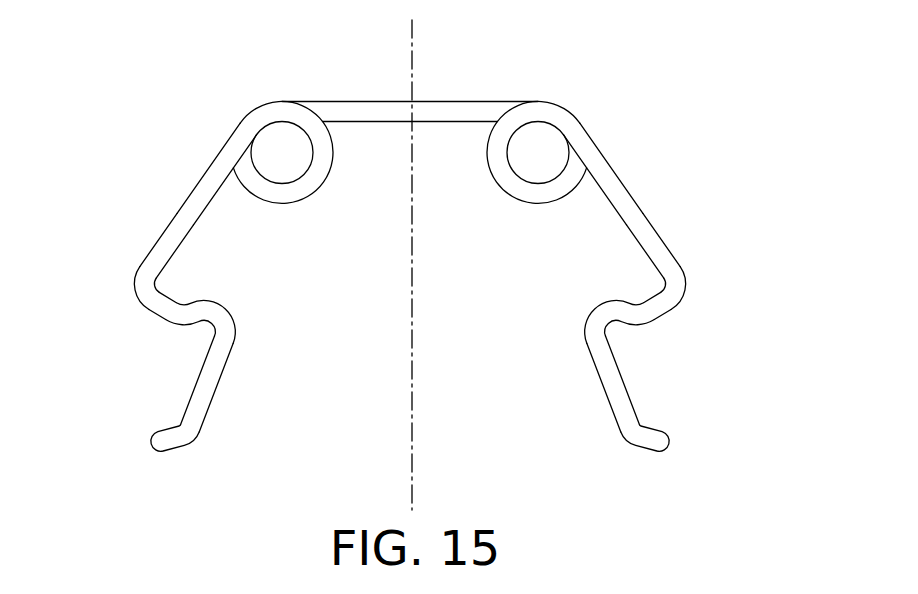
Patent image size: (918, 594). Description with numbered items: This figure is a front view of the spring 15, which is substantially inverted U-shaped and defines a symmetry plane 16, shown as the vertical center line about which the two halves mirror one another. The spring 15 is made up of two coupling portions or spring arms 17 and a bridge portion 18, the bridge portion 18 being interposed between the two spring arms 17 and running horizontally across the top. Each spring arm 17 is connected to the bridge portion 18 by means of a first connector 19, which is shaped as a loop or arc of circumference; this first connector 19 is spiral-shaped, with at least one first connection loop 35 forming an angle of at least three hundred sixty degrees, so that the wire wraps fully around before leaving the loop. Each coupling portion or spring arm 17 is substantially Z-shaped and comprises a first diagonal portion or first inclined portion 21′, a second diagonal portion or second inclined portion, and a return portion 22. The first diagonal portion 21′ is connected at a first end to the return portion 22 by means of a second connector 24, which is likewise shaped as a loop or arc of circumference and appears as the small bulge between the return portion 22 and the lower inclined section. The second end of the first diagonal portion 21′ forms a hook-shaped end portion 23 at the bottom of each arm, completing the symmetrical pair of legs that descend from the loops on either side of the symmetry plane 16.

The spring 15 is at (655, 122).
The symmetry plane 16 is at (413, 53).
The coupling portion or spring arm 17 is at (148, 247).
The bridge portion 18 is at (472, 103).
The first connector 19 is at (257, 116).
The first diagonal portion or first inclined portion 21′ is at (205, 394).
The return portion 22 is at (155, 304).
The hook-shaped end portion 23 is at (148, 434).
The second connector 24 is at (231, 327).
The first connection loop 35 is at (303, 193).